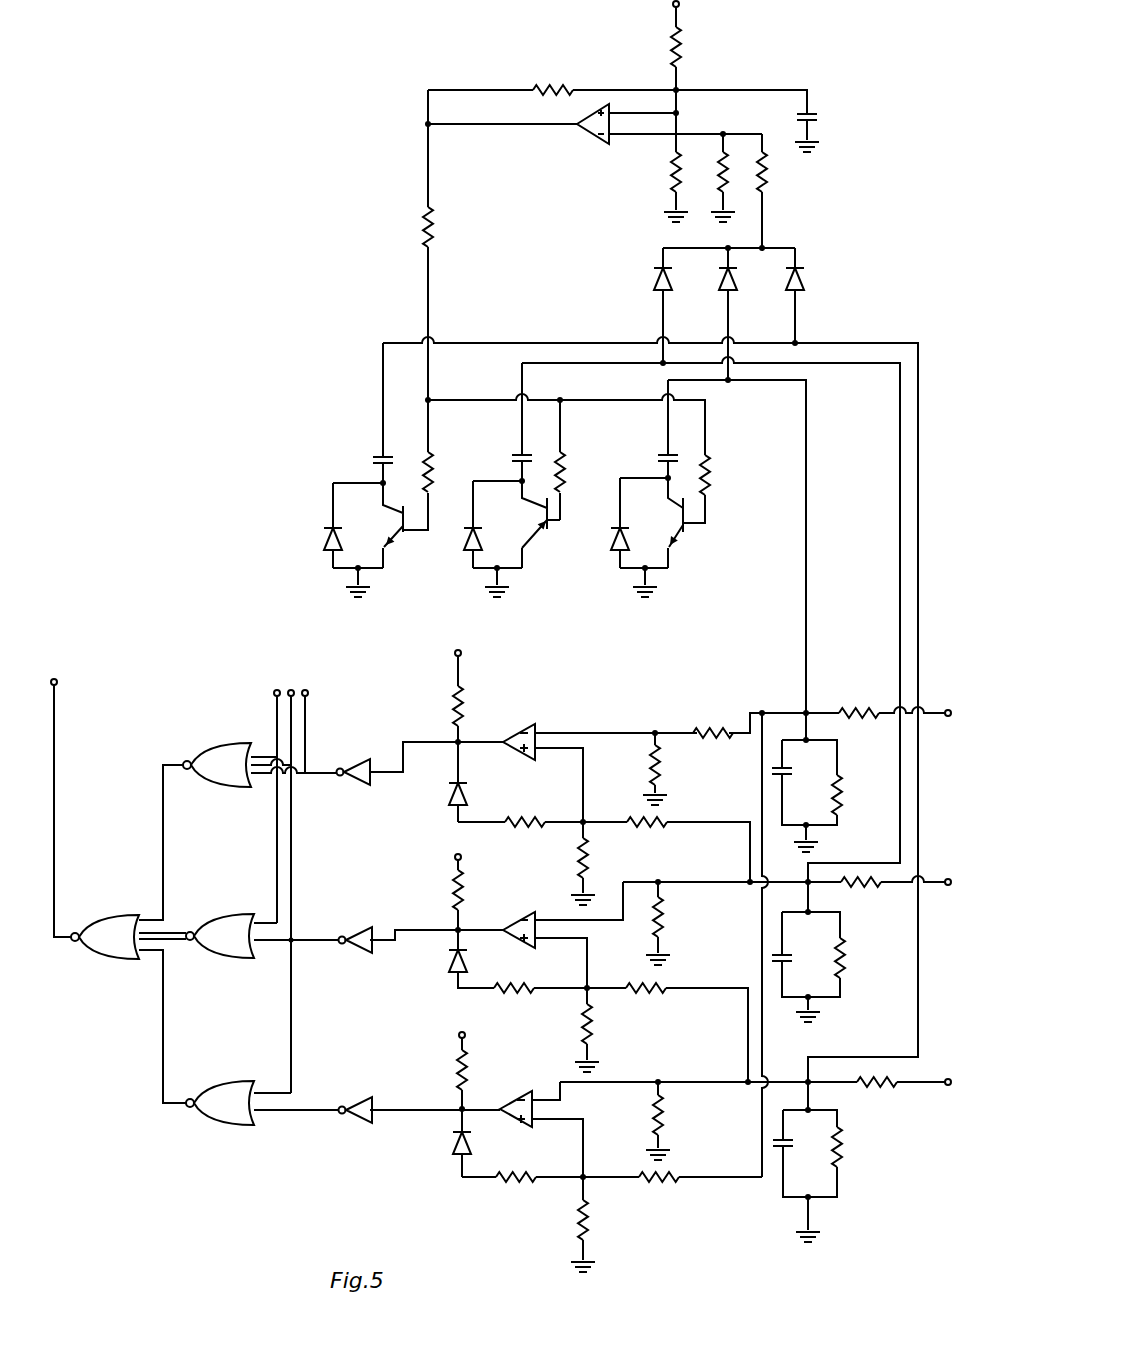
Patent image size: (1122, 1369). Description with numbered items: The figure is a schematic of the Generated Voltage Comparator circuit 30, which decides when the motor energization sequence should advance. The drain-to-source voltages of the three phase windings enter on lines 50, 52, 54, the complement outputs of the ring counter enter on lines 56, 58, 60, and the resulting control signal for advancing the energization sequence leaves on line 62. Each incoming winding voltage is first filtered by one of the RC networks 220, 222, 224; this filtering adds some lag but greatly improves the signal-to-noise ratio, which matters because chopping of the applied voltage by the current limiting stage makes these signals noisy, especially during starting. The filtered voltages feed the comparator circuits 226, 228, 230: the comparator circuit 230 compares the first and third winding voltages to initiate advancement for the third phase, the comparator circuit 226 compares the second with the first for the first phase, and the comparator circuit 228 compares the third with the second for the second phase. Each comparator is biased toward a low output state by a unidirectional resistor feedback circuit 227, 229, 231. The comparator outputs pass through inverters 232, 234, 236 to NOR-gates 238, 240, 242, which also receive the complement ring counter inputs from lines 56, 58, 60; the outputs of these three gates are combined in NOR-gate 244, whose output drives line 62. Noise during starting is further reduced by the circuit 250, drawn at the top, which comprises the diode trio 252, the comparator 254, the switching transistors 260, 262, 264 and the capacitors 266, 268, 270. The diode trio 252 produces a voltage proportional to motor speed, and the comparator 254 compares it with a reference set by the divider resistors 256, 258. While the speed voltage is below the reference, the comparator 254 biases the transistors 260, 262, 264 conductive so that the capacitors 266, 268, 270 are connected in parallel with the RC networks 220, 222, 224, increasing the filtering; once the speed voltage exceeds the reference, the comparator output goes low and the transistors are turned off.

The Generated Voltage Comparator circuit 30 is at (272, 428).
The line 50 is at (948, 885).
The line 52 is at (928, 1086).
The line 54 is at (948, 710).
The line 56 is at (293, 738).
The line 58 is at (307, 710).
The line 60 is at (277, 722).
The line 62 is at (54, 820).
The RC network 220 is at (793, 878).
The RC network 222 is at (860, 1044).
The RC network 224 is at (839, 706).
The comparator circuit 226 is at (497, 922).
The unidirectional resistor feedback circuit 227 is at (438, 942).
The comparator circuit 228 is at (488, 1084).
The unidirectional resistor feedback circuit 229 is at (535, 1190).
The comparator circuit 230 is at (509, 724).
The unidirectional resistor feedback circuit 231 is at (559, 814).
The inverter 232 is at (352, 926).
The inverter 234 is at (370, 1096).
The inverter 236 is at (351, 786).
The NOR-gate 238 is at (213, 912).
The NOR-gate 240 is at (222, 1126).
The NOR-gate 242 is at (201, 789).
The NOR-gate 244 is at (120, 960).
The circuit 250 is at (380, 267).
The diode trio 252 is at (768, 245).
The comparator 254 is at (601, 146).
The divider resistor 256 is at (683, 62).
The divider resistor 258 is at (668, 158).
The switching transistor 260 is at (540, 540).
The switching transistor 262 is at (390, 550).
The switching transistor 264 is at (686, 550).
The capacitor 266 is at (522, 452).
The capacitor 268 is at (380, 452).
The capacitor 270 is at (668, 452).